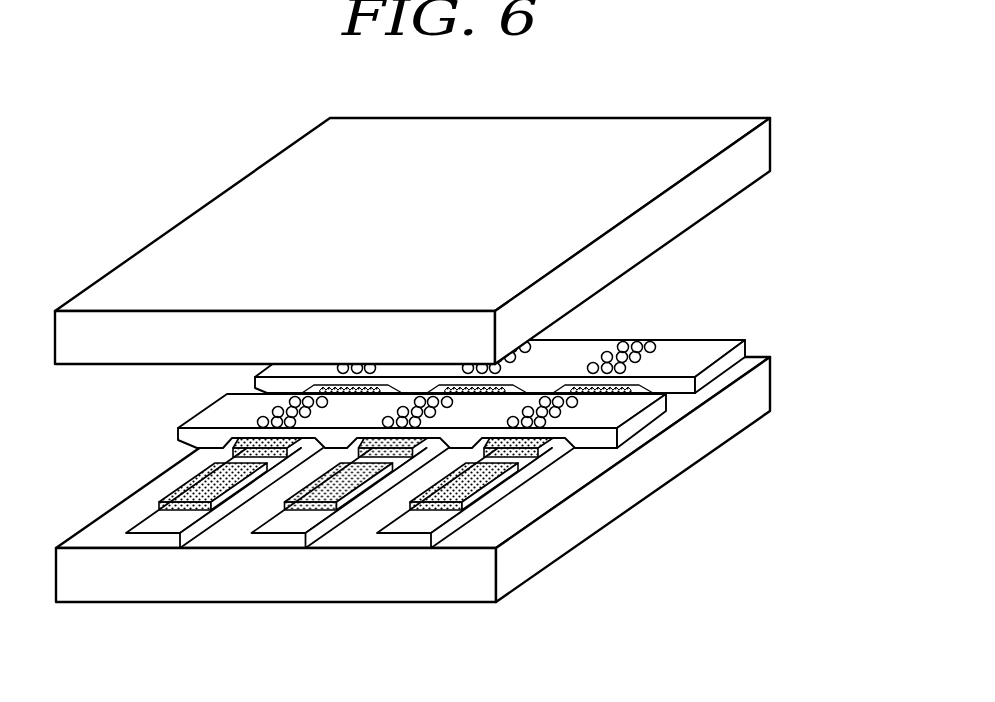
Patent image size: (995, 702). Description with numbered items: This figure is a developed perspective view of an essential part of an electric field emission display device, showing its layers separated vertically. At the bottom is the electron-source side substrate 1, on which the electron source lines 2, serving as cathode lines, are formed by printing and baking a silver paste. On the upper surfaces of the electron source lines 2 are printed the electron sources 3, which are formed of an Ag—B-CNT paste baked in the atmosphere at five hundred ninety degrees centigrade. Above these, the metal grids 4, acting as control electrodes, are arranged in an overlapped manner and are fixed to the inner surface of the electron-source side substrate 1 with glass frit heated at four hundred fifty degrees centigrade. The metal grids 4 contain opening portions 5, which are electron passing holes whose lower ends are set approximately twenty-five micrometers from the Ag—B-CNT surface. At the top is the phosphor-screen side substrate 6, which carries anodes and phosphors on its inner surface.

The electron-source side substrate 1 is at (548, 555).
The electron source lines 2 is at (148, 543).
The electron sources 3 is at (177, 490).
The metal grids 4 is at (632, 428).
The opening portions 5 is at (653, 345).
The phosphor-screen side substrate 6 is at (412, 241).